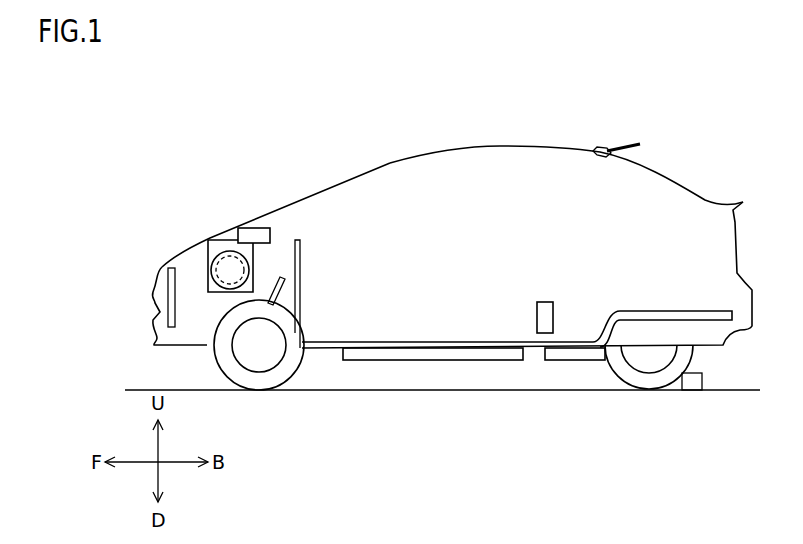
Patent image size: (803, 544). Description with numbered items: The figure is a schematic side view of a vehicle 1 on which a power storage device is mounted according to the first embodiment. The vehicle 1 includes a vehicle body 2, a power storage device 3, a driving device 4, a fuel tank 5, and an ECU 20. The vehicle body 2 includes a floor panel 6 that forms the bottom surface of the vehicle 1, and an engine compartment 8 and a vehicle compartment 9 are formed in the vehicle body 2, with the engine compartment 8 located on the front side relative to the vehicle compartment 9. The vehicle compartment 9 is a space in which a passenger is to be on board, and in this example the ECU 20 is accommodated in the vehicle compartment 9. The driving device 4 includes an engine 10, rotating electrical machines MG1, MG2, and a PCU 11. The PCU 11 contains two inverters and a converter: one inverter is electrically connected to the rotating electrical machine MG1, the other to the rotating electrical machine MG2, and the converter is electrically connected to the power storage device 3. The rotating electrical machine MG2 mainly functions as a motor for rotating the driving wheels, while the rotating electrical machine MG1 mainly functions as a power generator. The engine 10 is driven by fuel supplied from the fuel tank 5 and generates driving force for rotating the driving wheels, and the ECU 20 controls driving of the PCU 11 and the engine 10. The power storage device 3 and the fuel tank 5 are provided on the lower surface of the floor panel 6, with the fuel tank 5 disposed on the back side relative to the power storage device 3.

The vehicle 1 is at (372, 141).
The vehicle body 2 is at (506, 146).
The power storage device 3 is at (401, 353).
The driving device 4 is at (85, 230).
The fuel tank 5 is at (580, 353).
The floor panel 6 is at (444, 349).
The engine compartment 8 is at (202, 217).
The vehicle compartment 9 is at (576, 138).
The engine 10 is at (208, 248).
The PCU 11 is at (255, 236).
The ECU 20 is at (550, 334).
The rotating electrical machine MG1 is at (212, 264).
The rotating electrical machine MG2 is at (216, 285).